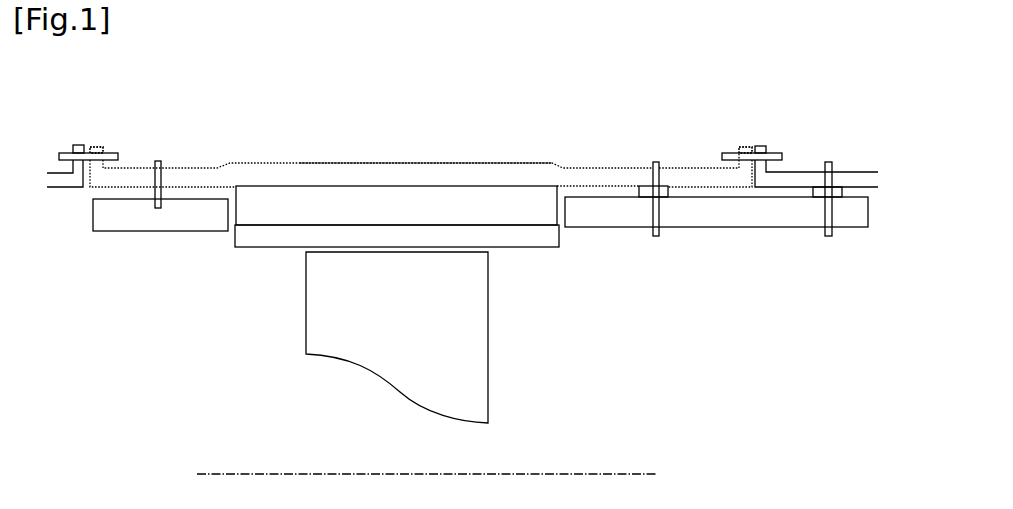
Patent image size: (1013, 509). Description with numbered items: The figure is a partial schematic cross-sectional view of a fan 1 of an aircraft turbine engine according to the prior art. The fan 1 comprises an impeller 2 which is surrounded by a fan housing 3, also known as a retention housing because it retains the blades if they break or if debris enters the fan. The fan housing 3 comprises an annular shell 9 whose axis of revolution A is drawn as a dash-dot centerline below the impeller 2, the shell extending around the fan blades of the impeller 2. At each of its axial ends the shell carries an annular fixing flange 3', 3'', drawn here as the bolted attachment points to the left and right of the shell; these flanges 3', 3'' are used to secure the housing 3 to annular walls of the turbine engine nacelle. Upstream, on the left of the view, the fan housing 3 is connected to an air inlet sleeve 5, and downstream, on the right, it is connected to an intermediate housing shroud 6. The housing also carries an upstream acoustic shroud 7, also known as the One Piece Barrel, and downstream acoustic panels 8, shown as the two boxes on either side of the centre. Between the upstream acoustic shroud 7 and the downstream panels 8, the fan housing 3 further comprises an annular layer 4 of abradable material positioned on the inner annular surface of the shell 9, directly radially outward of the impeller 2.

The fan 1 is at (408, 95).
The impeller 2 is at (402, 333).
The fan housing 3 is at (421, 152).
The annular fixing flange 3' is at (90, 127).
The annular fixing flange 3'' is at (752, 129).
The annular layer of abradable material 4 is at (261, 248).
The air inlet sleeve 5 is at (52, 168).
The intermediate housing shroud 6 is at (851, 170).
The upstream acoustic shroud 7 is at (112, 232).
The downstream acoustic panels 8 is at (607, 227).
The annular shell 9 is at (492, 163).
The axis of revolution A is at (645, 475).